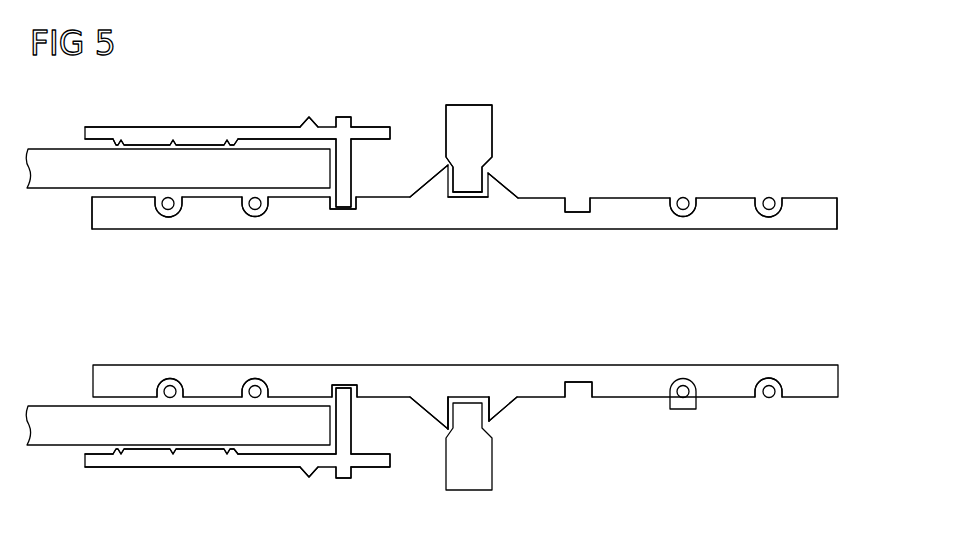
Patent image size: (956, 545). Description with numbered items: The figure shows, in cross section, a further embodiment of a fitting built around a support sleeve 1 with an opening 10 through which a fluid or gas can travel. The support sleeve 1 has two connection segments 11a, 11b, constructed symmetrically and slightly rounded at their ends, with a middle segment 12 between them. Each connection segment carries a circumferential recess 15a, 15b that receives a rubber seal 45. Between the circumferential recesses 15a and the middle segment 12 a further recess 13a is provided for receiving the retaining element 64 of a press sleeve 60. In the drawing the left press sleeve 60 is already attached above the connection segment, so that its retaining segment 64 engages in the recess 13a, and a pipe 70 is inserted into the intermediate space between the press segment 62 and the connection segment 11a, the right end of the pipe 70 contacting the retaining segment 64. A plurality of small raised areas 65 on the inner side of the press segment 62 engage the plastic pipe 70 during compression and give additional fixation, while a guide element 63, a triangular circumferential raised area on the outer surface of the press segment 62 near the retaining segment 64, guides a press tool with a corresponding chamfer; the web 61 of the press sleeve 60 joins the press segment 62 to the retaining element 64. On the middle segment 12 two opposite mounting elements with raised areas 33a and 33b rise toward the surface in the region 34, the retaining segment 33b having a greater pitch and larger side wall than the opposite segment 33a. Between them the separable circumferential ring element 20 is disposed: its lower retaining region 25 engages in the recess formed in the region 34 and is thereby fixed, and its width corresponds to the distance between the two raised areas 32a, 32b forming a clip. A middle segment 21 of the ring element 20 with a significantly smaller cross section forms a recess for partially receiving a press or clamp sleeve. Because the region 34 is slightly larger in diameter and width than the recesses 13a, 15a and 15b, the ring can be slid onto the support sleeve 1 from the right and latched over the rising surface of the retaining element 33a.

The support sleeve 1 is at (727, 148).
The opening 10 is at (711, 309).
The first connection segment 11a is at (92, 214).
The second connection segment 11b is at (814, 222).
The middle segment 12 is at (448, 218).
The recess 13a is at (344, 213).
The circumferential recess 15a is at (255, 215).
The circumferential recess 15b is at (168, 230).
The separable circumferential ring element 20 is at (467, 99).
The middle segment of ring element 21 is at (450, 118).
The retaining region 25 is at (469, 188).
The raised area 32a is at (495, 402).
The raised area 32b is at (438, 408).
The retaining segment 33a is at (507, 187).
The retaining segment 33b is at (431, 177).
The region 34 is at (472, 395).
The rubber seal 45 is at (683, 196).
The press sleeve 60 is at (177, 117).
The holding web 61 is at (373, 126).
The press segment 62 is at (214, 127).
The guide element 63 is at (300, 123).
The retaining element 64 is at (348, 182).
The raised areas 65 is at (128, 150).
The pipe 70 is at (47, 148).